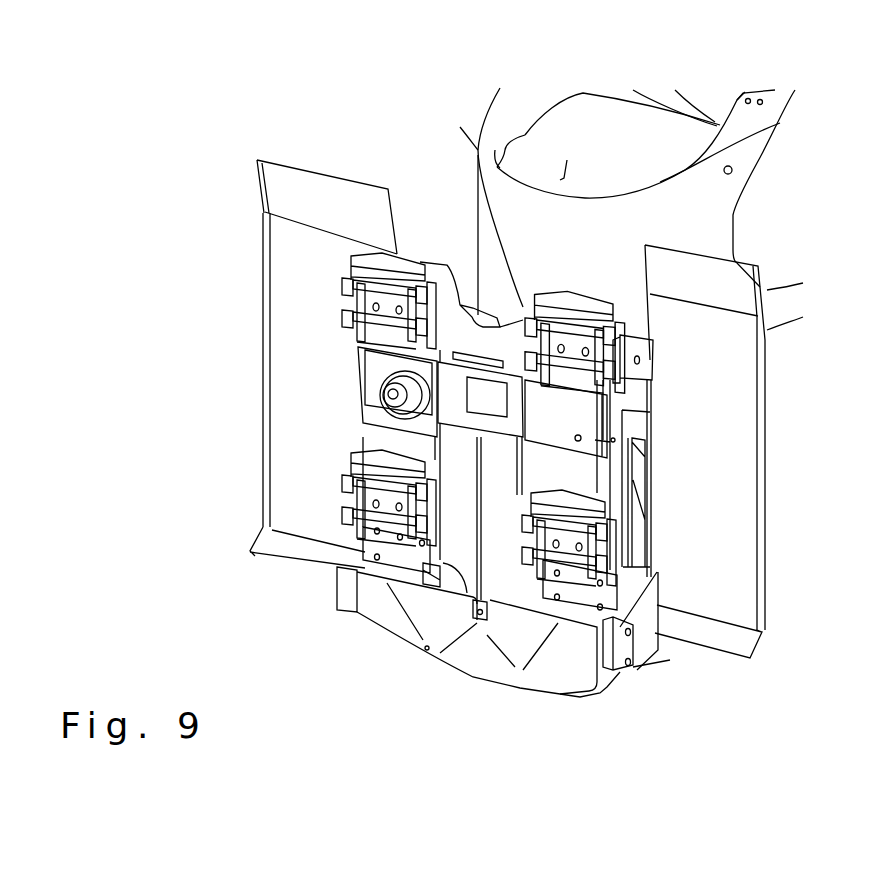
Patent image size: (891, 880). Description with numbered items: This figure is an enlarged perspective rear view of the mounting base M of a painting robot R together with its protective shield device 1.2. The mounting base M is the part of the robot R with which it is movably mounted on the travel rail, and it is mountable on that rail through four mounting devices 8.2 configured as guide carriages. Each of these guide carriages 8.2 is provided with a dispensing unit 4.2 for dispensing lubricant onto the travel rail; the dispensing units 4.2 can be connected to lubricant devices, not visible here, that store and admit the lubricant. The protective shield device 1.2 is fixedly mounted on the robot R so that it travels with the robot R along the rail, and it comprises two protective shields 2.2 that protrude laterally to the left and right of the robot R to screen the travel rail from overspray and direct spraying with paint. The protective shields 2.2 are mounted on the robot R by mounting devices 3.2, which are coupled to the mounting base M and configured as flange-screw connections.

The robot R is at (526, 74).
The protective shield device 1.2 is at (201, 244).
The protective shield 2.2 is at (282, 395).
The mounting device 3.2 is at (648, 355).
The dispensing unit 4.2 is at (346, 278).
The mounting device (guide carriage) 8.2 is at (397, 277).
The mounting base M is at (372, 607).